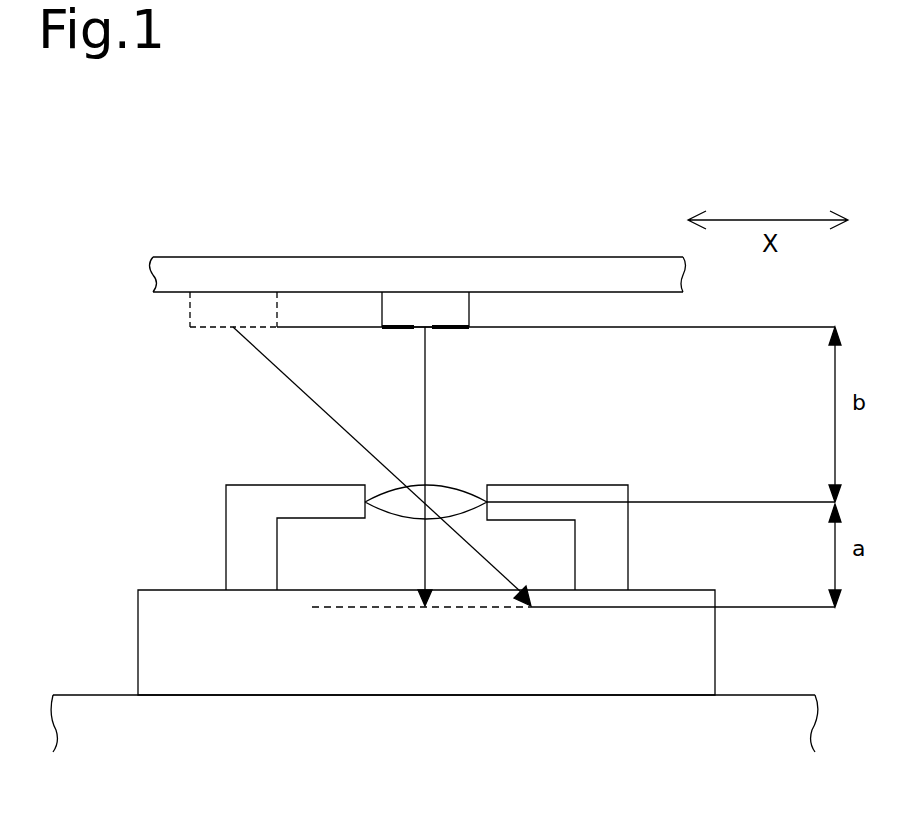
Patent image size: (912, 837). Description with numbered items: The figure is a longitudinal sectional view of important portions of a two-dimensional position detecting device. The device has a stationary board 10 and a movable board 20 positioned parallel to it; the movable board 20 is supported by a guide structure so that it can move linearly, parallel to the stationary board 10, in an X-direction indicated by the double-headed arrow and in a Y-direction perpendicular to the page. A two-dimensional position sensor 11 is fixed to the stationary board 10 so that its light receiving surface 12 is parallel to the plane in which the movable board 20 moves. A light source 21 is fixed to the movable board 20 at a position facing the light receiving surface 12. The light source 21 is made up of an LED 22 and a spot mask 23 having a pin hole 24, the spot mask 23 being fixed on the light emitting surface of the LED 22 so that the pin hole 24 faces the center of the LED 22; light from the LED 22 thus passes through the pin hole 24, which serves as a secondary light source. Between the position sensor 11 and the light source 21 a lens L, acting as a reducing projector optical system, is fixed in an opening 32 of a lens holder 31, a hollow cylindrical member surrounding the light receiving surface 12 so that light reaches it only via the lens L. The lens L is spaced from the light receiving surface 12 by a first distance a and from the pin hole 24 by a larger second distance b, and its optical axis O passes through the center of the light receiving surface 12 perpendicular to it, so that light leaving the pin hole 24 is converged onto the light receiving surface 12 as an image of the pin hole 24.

The stationary board 10 is at (470, 789).
The two-dimensional position sensor 11 is at (155, 629).
The light receiving surface 12 is at (345, 607).
The movable board 20 is at (627, 266).
The light source 21 is at (232, 327).
The LED 22 is at (444, 300).
The spot mask 23 is at (428, 330).
The pin hole 24 is at (232, 328).
The lens holder 31 is at (237, 497).
The opening 32 is at (367, 482).
The optical axis O is at (427, 437).
The lens L is at (450, 487).